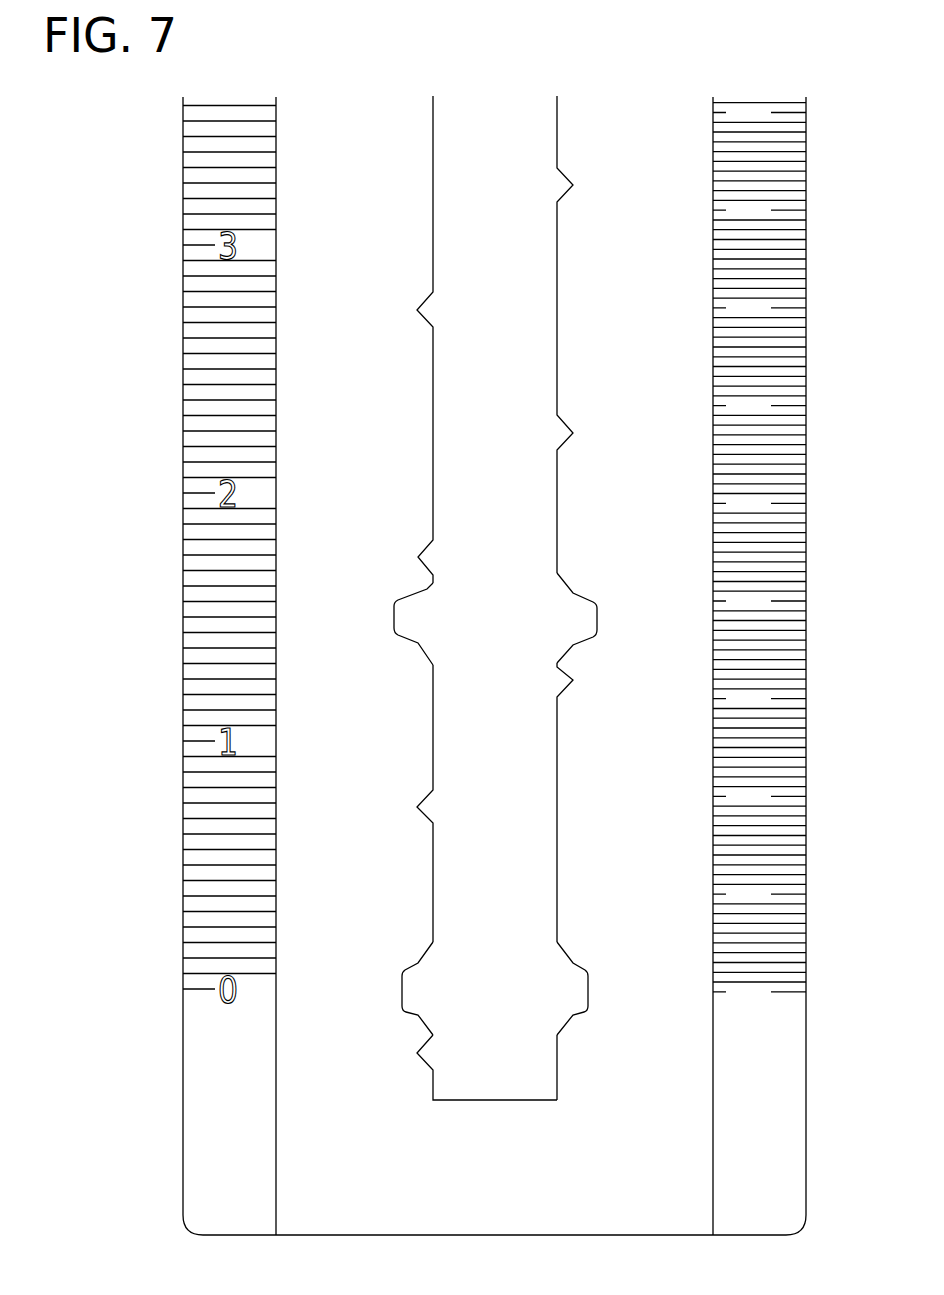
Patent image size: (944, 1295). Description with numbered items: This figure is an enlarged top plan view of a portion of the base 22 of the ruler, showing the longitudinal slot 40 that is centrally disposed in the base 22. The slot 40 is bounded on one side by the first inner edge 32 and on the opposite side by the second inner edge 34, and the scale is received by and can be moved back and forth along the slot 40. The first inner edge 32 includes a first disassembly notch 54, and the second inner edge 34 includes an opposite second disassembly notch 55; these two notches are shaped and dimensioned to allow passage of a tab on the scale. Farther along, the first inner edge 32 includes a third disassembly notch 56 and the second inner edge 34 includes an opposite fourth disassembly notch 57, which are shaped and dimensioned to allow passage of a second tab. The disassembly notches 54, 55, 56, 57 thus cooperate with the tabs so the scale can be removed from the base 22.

The base 22 is at (805, 156).
The longitudinal slot 40 is at (486, 589).
The first inner edge 32 is at (433, 188).
The second inner edge 34 is at (557, 260).
The first disassembly notch 54 is at (422, 997).
The second disassembly notch 55 is at (578, 987).
The third disassembly notch 56 is at (403, 618).
The fourth disassembly notch 57 is at (582, 615).